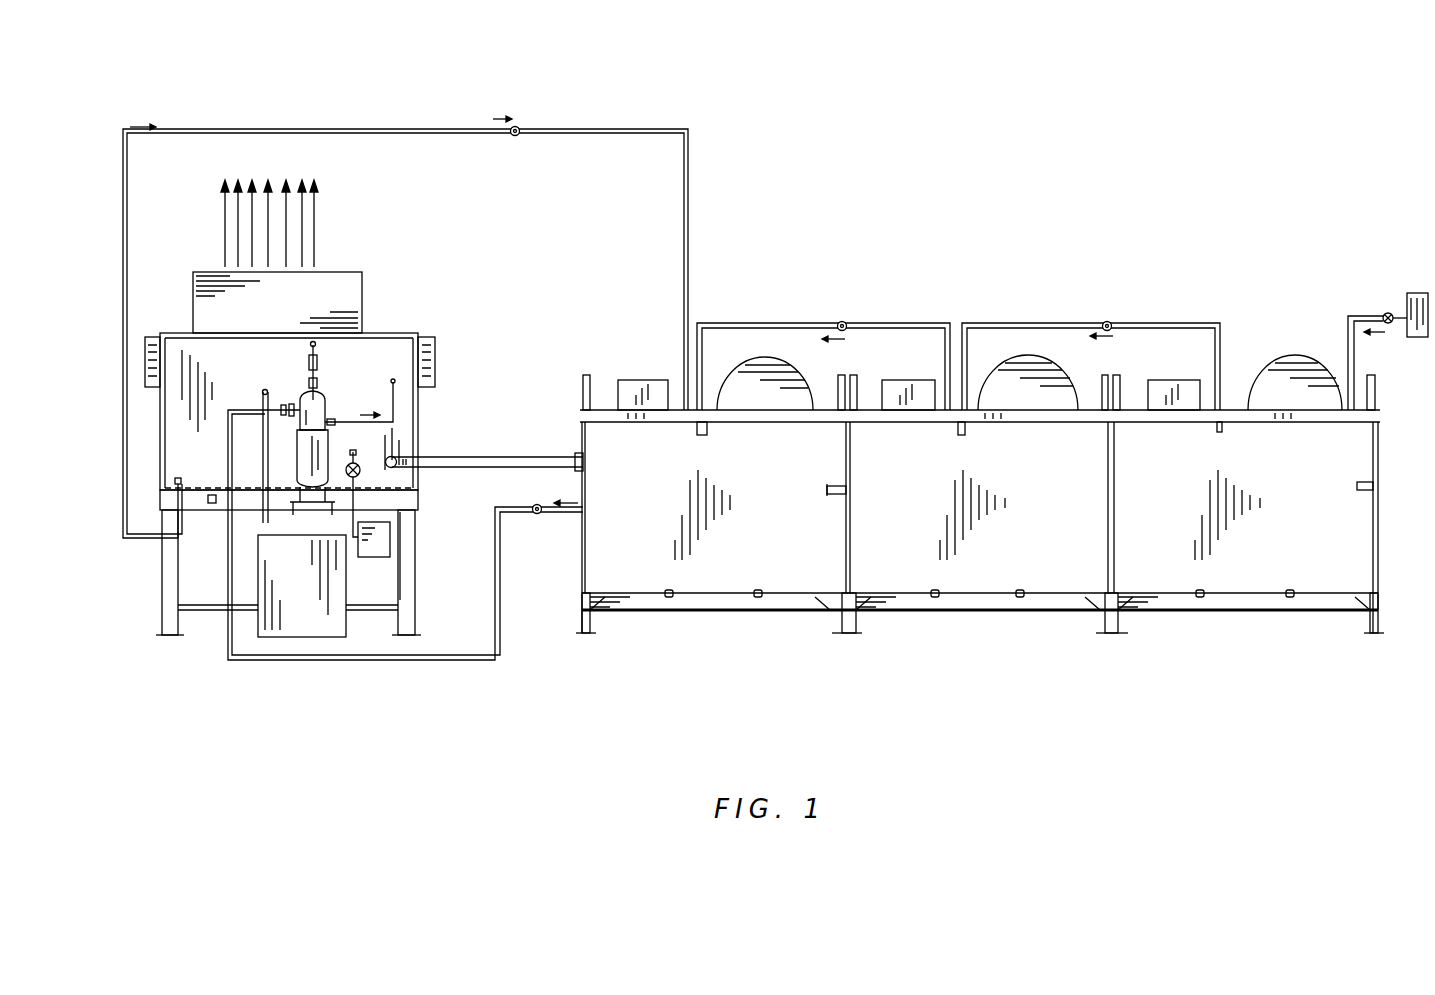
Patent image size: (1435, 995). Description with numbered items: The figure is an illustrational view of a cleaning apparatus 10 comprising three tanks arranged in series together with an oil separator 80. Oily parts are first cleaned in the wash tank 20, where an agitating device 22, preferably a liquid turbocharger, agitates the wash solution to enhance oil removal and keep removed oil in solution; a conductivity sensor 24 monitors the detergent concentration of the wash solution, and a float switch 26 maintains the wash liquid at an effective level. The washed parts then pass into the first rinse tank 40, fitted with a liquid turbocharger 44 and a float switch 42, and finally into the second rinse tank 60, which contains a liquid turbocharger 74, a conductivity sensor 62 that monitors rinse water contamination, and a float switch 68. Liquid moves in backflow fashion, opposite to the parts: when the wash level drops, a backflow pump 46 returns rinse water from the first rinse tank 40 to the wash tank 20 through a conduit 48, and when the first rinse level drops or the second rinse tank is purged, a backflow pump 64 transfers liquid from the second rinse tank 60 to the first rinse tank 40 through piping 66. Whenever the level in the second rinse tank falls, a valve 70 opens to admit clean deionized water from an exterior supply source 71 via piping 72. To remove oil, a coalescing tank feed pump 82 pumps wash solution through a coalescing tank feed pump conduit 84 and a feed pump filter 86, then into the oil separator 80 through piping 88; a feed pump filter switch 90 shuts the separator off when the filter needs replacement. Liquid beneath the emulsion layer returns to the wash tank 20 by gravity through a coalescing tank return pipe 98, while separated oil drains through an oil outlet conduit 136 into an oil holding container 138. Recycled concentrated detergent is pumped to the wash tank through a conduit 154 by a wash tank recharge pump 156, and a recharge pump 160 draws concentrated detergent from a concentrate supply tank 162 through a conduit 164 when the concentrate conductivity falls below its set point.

The cleaning apparatus 10 is at (802, 204).
The wash tank 20 is at (728, 578).
The agitating device 22 is at (632, 380).
The conductivity sensor 24 is at (827, 496).
The float switch 26 is at (703, 437).
The first rinse tank 40 is at (996, 573).
The float switch 42 is at (962, 437).
The liquid turbocharger 44 is at (912, 380).
The backflow pump 46 is at (844, 322).
The conduit 48 is at (752, 322).
The second rinse tank 60 is at (1255, 575).
The conductivity sensor 62 is at (1360, 492).
The backflow pump 64 is at (1108, 322).
The piping 66 is at (1030, 322).
The float switch 68 is at (1218, 432).
The valve 70 is at (1384, 314).
The exterior supply source 71 is at (1420, 293).
The piping 72 is at (1355, 360).
The liquid turbocharger 74 is at (1187, 380).
The oil separator 80 is at (399, 314).
The coalescing tank feed pump 82 is at (537, 514).
The coalescing tank feed pump conduit 84 is at (510, 626).
The feed pump filter 86 is at (322, 405).
The piping 88 is at (393, 412).
The feed pump filter switch 90 is at (308, 355).
The coalescing tank return pipe 98 is at (484, 468).
The oil outlet conduit 136 is at (264, 393).
The oil holding container 138 is at (305, 627).
The conduit 154 is at (620, 128).
The wash tank recharge pump 156 is at (518, 127).
The recharge pump 160 is at (360, 466).
The concentrate supply tank 162 is at (382, 553).
The conduit 164 is at (402, 512).